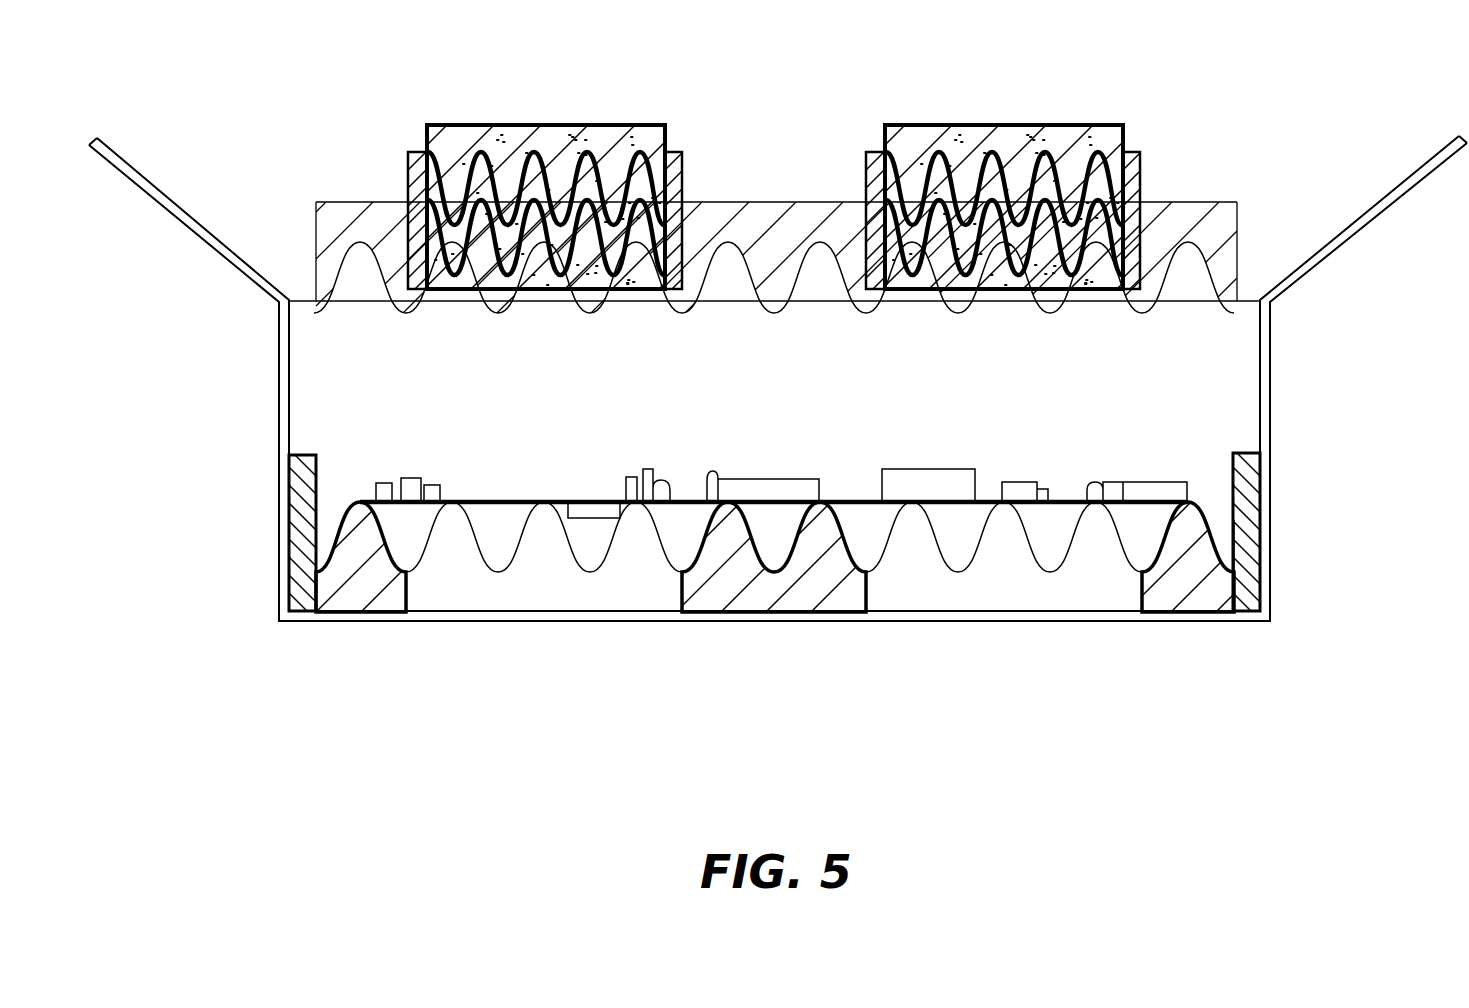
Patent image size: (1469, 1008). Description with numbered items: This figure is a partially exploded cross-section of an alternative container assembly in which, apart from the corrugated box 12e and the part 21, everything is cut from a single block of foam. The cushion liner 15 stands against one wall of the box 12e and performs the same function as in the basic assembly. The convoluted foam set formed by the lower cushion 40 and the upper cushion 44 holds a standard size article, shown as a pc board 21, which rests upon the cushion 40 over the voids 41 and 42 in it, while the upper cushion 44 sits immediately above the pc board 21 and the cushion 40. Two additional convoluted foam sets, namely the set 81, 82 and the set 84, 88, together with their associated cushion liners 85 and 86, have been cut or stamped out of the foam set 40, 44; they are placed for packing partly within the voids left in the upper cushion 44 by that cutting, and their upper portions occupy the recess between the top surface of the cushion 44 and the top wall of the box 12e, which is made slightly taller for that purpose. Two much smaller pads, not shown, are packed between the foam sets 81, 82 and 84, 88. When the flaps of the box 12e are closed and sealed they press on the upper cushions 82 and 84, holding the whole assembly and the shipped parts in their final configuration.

The corrugated box 12e is at (1272, 398).
The upper cushion 44 is at (1238, 228).
The upper cushion of first additional foam set 82 is at (455, 125).
The upper cushion of second additional foam set 84 is at (1042, 125).
The lower cushion of first additional foam set 81 is at (457, 275).
The cushion liner 85 is at (682, 150).
The cushion liner 86 is at (868, 152).
The lower cushion of second additional foam set 88 is at (1142, 166).
The cushion liner 15 is at (303, 455).
The lower cushion 40 is at (1262, 497).
The void 41 is at (518, 584).
The void 42 is at (1000, 582).
The pc board 21 is at (517, 500).